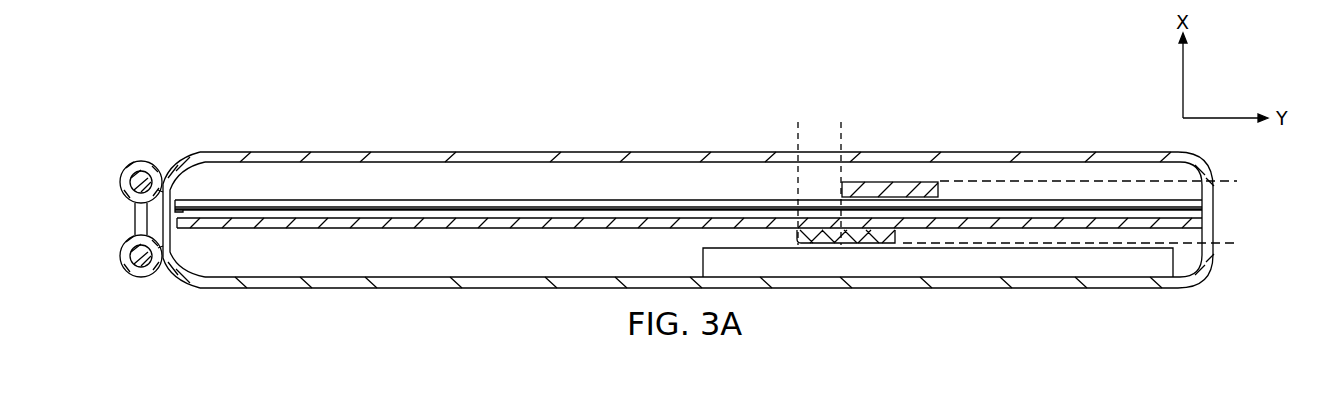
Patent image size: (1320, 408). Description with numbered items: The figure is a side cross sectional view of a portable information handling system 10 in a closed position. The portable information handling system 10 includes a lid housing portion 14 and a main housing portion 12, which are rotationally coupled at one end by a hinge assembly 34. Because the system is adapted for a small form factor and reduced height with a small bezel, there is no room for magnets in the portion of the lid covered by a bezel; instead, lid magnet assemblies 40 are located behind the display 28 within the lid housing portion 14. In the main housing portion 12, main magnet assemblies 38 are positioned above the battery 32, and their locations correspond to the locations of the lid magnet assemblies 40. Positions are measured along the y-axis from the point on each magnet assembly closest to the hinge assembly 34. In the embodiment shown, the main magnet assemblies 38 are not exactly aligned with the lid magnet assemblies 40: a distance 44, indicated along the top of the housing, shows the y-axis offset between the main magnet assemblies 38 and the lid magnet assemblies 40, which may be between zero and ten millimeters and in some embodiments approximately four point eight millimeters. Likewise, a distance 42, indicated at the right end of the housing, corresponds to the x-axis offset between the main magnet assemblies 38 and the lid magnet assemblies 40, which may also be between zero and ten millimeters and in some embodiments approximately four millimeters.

The portable information handling system 10 is at (541, 104).
The main housing portion 12 is at (358, 282).
The lid housing portion 14 is at (358, 157).
The display 28 is at (322, 208).
The battery 32 is at (710, 260).
The hinge assembly 34 is at (121, 148).
The main magnet assemblies 38 is at (878, 238).
The lid magnet assemblies 40 is at (878, 187).
The distance 42 is at (1247, 181).
The distance 44 is at (841, 110).